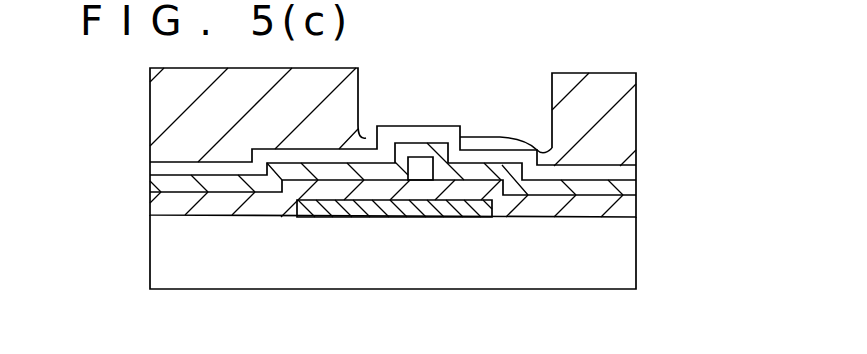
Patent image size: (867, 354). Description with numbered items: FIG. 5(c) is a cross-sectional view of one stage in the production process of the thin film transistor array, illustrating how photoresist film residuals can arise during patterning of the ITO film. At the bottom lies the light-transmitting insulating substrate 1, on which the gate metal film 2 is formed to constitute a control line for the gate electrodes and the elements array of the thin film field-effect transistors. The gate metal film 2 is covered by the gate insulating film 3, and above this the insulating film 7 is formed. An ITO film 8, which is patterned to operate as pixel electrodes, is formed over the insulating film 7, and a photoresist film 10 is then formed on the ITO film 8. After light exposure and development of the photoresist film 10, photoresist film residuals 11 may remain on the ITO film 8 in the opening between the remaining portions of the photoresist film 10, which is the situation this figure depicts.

The light-transmitting insulating substrate 1 is at (620, 253).
The gate metal film 2 is at (333, 217).
The gate insulating film 3 is at (623, 205).
The insulating film 7 is at (627, 188).
The ITO film 8 is at (635, 170).
The photoresist film 10 is at (623, 113).
The photoresist film residuals 11 is at (500, 137).